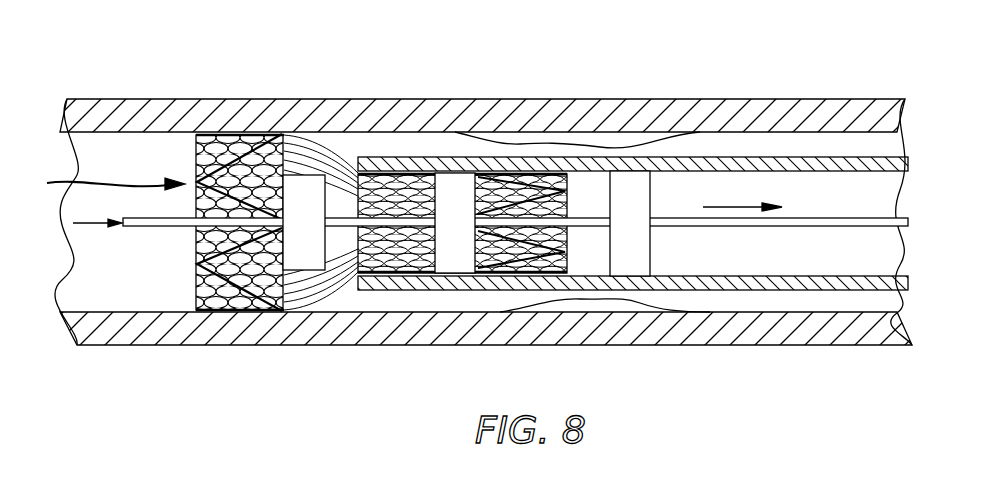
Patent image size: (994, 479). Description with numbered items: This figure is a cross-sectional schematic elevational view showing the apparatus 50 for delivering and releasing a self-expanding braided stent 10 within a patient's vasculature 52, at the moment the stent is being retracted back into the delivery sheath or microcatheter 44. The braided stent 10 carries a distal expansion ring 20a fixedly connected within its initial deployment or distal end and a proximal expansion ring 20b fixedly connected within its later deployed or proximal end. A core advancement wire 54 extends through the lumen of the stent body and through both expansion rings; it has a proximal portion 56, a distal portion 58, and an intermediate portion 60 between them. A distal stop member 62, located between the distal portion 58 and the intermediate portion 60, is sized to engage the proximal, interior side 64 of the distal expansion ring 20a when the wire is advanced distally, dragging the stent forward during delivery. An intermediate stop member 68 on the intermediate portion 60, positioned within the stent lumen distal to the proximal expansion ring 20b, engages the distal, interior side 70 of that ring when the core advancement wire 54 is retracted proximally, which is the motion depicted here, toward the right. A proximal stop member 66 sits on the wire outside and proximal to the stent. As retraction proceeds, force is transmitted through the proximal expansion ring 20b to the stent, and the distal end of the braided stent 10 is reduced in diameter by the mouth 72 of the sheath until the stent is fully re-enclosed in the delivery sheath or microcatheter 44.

The braided stent 10 is at (102, 198).
The distal expansion ring 20a is at (237, 312).
The proximal expansion ring 20b is at (547, 175).
The delivery sheath or microcatheter 44 is at (815, 155).
The apparatus 50 is at (683, 150).
The patient's vasculature 52 is at (593, 157).
The core advancement wire 54 is at (813, 227).
The proximal portion 56 is at (590, 220).
The distal portion 58 is at (142, 226).
The intermediate portion 60 is at (393, 222).
The distal stop member 62 is at (312, 250).
The proximal, interior side 64 is at (283, 138).
The proximal stop member 66 is at (633, 258).
The intermediate stop member 68 is at (447, 197).
The distal, interior side 70 is at (477, 175).
The mouth 72 is at (357, 168).